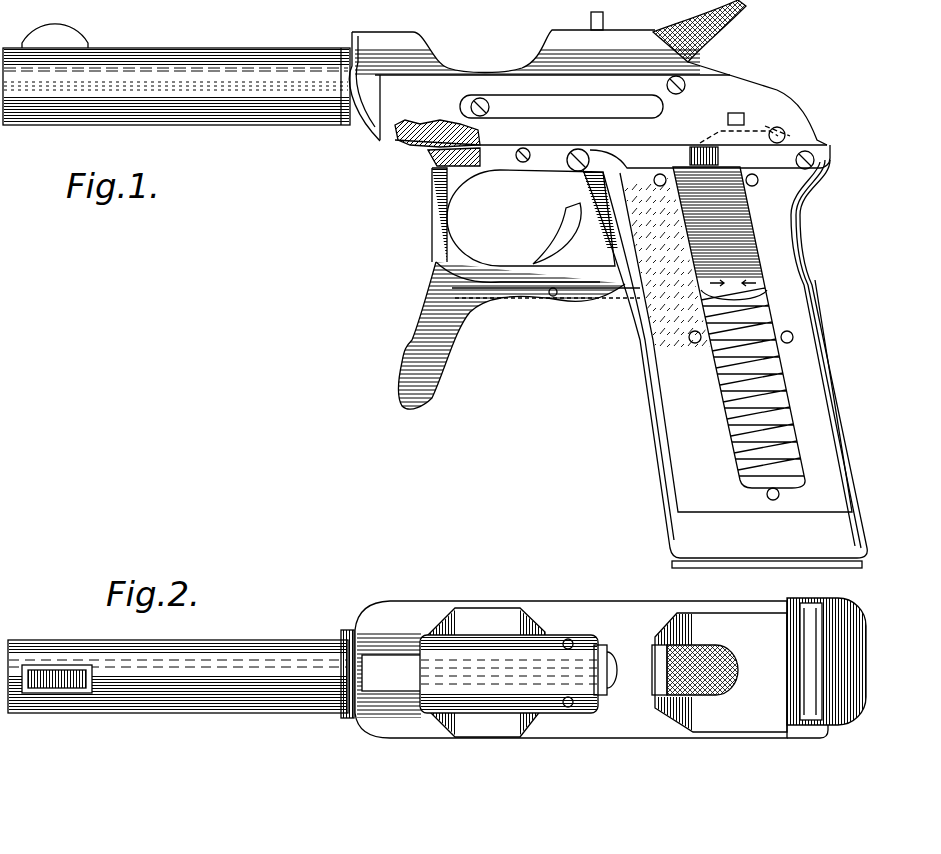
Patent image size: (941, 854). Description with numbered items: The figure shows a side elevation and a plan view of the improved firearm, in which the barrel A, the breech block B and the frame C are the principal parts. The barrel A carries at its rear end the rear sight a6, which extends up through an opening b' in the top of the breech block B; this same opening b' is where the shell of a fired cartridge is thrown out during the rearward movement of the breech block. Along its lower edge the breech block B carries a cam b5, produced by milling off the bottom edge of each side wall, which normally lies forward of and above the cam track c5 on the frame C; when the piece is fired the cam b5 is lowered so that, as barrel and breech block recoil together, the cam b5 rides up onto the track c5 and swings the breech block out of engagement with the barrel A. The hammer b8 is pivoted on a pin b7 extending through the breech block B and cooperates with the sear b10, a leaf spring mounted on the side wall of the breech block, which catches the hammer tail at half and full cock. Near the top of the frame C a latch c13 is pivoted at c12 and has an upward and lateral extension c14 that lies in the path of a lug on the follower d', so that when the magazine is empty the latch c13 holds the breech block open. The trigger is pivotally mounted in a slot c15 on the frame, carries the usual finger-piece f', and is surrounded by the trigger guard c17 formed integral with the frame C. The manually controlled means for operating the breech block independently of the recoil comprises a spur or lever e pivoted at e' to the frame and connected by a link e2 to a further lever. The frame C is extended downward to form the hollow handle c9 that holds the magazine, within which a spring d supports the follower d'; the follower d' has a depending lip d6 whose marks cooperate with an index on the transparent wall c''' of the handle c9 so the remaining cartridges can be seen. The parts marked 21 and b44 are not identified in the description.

In FIG. 1, the barrel A is at (288, 113).
In FIG. 2, the barrel A is at (273, 640).
In FIG. 1, the barrel sleeve 21 is at (349, 44).
In FIG. 1, the opening b' is at (541, 72).
In FIG. 2, the opening b' is at (571, 637).
In FIG. 1, the rear sight a6 is at (590, 14).
In FIG. 2, the rear sight a6 is at (614, 670).
In FIG. 1, the hammer b8 is at (712, 20).
In FIG. 2, the hammer b8 is at (705, 644).
In FIG. 1, the pin b7 is at (690, 84).
In FIG. 1, the breech block B is at (780, 88).
In FIG. 2, the breech block B is at (721, 672).
In FIG. 1, the upward and lateral extension c14 is at (735, 112).
In FIG. 1, the latch c13 is at (765, 127).
In FIG. 1, the pivot c12 is at (790, 137).
In FIG. 1, the slot c15 is at (688, 160).
In FIG. 1, the sear b10 is at (561, 108).
In FIG. 1, the pivot e' is at (568, 144).
In FIG. 1, the cam b5 is at (420, 191).
In FIG. 1, the cam track c5 is at (468, 160).
In FIG. 1, the trigger guard c17 is at (435, 230).
In FIG. 1, the finger-piece f' is at (538, 233).
In FIG. 1, the spur or lever e is at (496, 335).
In FIG. 1, the link e2 is at (595, 300).
In FIG. 1, the frame C is at (832, 162).
In FIG. 2, the frame C is at (818, 663).
In FIG. 1, the transparent wall c''' is at (858, 466).
In FIG. 1, the handle c9 is at (668, 548).
In FIG. 1, the spring d is at (784, 327).
In FIG. 1, the depending lip d6 is at (763, 292).
In FIG. 1, the follower d' is at (795, 247).
In FIG. 2, the bolt pins b44 is at (567, 639).